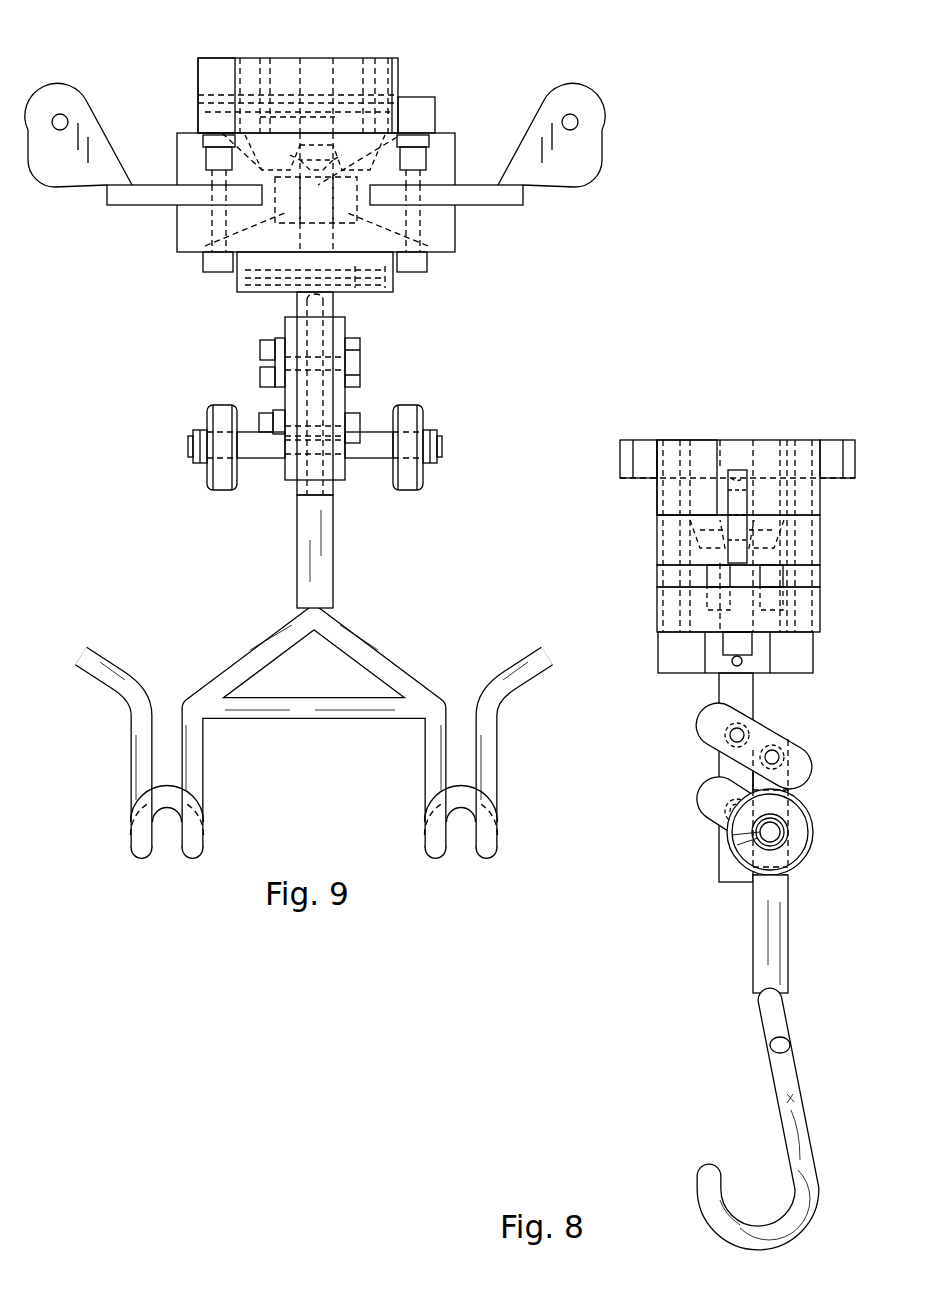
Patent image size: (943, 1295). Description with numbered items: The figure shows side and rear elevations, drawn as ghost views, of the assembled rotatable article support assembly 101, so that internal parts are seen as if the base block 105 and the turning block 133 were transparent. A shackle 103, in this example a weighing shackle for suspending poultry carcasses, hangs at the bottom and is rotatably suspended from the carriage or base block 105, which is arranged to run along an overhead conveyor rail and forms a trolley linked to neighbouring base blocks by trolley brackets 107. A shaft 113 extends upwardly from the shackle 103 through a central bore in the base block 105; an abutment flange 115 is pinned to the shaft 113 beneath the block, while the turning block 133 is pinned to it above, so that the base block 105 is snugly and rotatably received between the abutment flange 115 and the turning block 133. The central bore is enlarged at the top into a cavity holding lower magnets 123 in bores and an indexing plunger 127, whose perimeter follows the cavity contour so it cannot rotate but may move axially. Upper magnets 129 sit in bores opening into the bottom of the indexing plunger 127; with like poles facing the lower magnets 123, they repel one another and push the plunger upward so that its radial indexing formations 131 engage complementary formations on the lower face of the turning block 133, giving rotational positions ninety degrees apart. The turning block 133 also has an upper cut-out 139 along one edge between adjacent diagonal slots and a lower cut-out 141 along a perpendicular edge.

In FIG. 9, the rotatable article support assembly 101 is at (562, 272).
In FIG. 8, the rotatable article support assembly 101 is at (813, 375).
In FIG. 9, the shackle 103 is at (333, 545).
In FIG. 8, the shackle 103 is at (788, 925).
In FIG. 9, the base block 105 is at (185, 222).
In FIG. 8, the base block 105 is at (792, 620).
In FIG. 9, the trolley brackets 107 is at (52, 88).
In FIG. 9, the shaft 113 is at (333, 300).
In FIG. 8, the shaft 113 is at (755, 690).
In FIG. 9, the abutment flange 115 is at (260, 258).
In FIG. 8, the abutment flange 115 is at (790, 652).
In FIG. 9, the lower magnets 123 is at (205, 246).
In FIG. 8, the lower magnets 123 is at (712, 597).
In FIG. 9, the indexing plunger 127 is at (215, 126).
In FIG. 8, the indexing plunger 127 is at (697, 553).
In FIG. 9, the upper magnets 129 is at (397, 137).
In FIG. 8, the upper magnets 129 is at (780, 578).
In FIG. 9, the radial indexing formations 131 is at (355, 58).
In FIG. 8, the radial indexing formations 131 is at (772, 450).
In FIG. 9, the turning block 133 is at (222, 88).
In FIG. 8, the turning block 133 is at (703, 440).
In FIG. 9, the upper cut-out 139 is at (405, 97).
In FIG. 8, the lower cut-out 141 is at (657, 492).